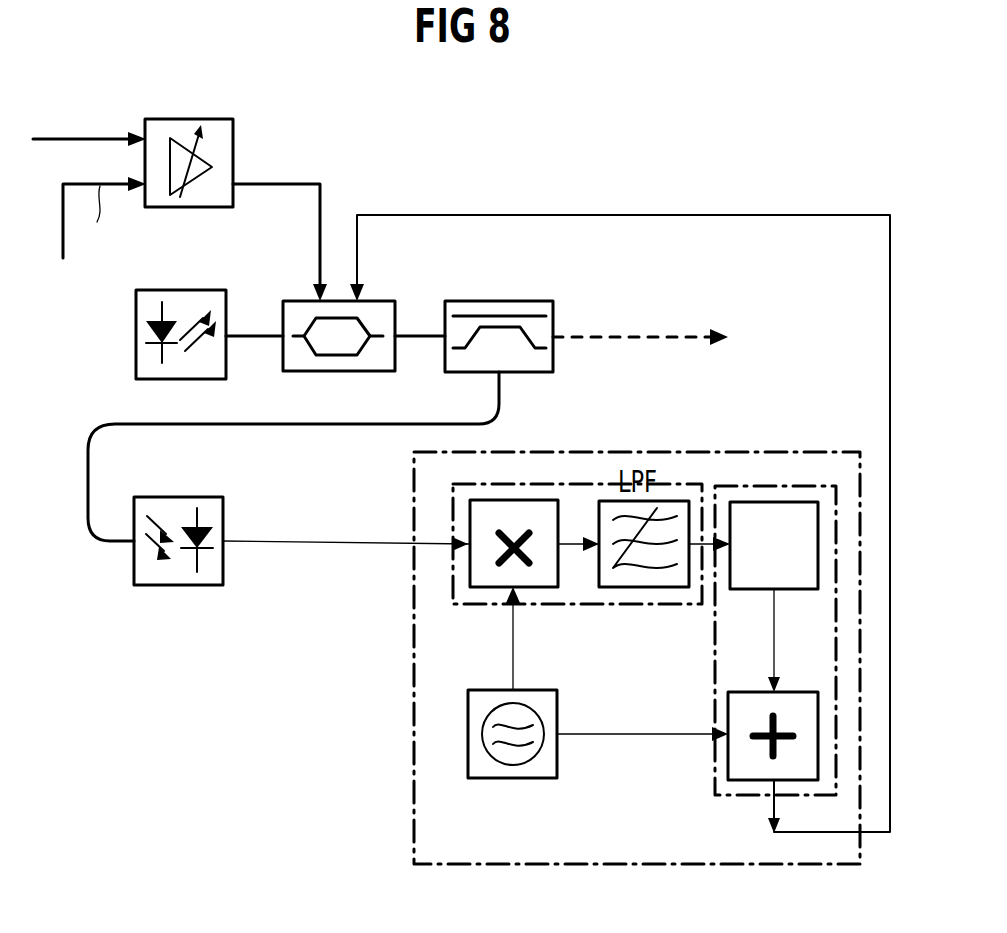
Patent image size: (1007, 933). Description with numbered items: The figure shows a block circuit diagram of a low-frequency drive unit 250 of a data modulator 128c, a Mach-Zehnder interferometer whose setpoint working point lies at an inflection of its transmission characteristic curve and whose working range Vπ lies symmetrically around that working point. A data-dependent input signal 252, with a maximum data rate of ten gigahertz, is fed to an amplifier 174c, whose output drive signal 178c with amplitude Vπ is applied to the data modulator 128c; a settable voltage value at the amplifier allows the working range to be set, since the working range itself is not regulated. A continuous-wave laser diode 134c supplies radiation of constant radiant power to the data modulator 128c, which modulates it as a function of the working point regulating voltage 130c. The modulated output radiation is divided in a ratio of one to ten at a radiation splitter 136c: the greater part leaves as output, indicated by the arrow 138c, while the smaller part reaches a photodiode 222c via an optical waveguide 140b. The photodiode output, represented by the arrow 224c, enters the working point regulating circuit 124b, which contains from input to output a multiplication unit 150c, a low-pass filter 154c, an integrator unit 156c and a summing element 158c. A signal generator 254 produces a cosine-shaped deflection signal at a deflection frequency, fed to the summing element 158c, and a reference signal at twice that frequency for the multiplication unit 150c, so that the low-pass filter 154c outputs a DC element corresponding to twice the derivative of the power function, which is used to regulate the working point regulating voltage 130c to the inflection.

The input signal 252 is at (108, 137).
The amplifier 174c is at (217, 119).
The drive signal 178c is at (288, 184).
The working point regulating voltage 130c is at (718, 215).
The laser diode 134c is at (226, 355).
The data modulator 128c is at (395, 355).
The radiation splitter 136c is at (530, 301).
The arrow 138c is at (646, 337).
The optical waveguide 140b is at (499, 388).
The working point regulating circuit 124b is at (820, 453).
The photodiode 222c is at (180, 586).
The arrow 224c is at (302, 541).
The low-frequency drive unit 250 is at (376, 597).
The multiplication unit 150c is at (548, 588).
The low-pass filter 154c is at (647, 588).
The integrator unit 156c is at (795, 590).
The summing element 158c is at (745, 781).
The signal generator 254 is at (557, 755).